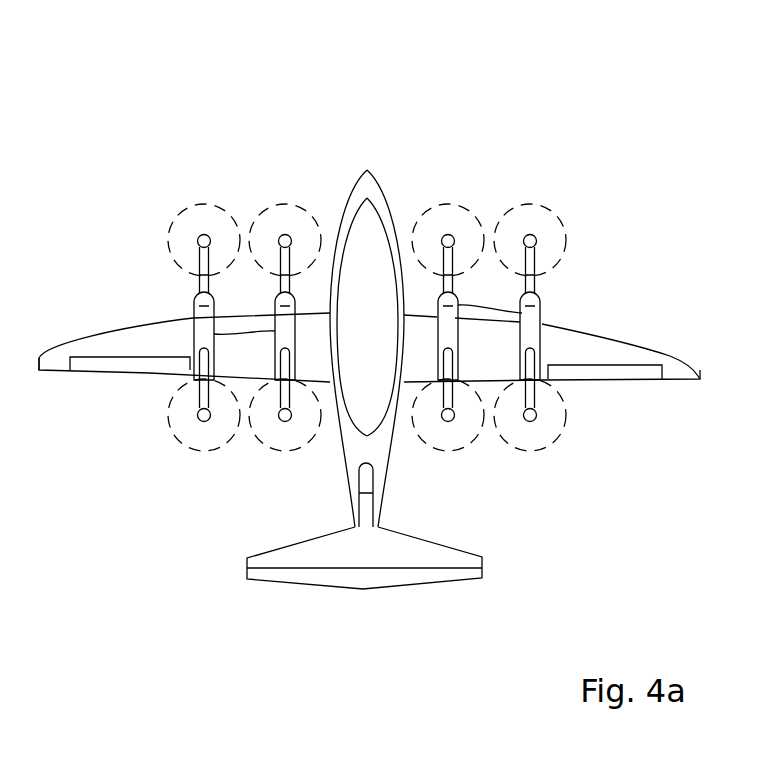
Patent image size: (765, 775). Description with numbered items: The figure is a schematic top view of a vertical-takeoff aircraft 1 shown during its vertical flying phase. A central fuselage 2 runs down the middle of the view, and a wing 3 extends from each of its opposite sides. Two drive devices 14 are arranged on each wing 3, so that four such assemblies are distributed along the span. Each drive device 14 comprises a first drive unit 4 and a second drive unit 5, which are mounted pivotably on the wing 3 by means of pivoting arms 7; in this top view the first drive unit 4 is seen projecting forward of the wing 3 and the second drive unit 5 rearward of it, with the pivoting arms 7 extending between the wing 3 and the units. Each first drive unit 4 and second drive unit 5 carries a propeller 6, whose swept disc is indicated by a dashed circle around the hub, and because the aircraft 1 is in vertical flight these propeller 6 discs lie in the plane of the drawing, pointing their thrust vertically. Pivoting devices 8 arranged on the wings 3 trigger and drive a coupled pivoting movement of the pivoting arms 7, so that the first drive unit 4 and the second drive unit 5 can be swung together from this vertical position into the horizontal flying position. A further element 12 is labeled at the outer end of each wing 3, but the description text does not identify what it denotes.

The vertical-takeoff aircraft 1 is at (628, 182).
The fuselage 2 is at (367, 168).
The wing 3 is at (98, 373).
The first drive unit 4 is at (203, 181).
The second drive unit 5 is at (155, 420).
The propeller 6 is at (229, 213).
The pivoting arm 7 is at (203, 262).
The pivoting device 8 is at (194, 336).
The wing tip 12 is at (51, 373).
The drive device 14 is at (187, 481).